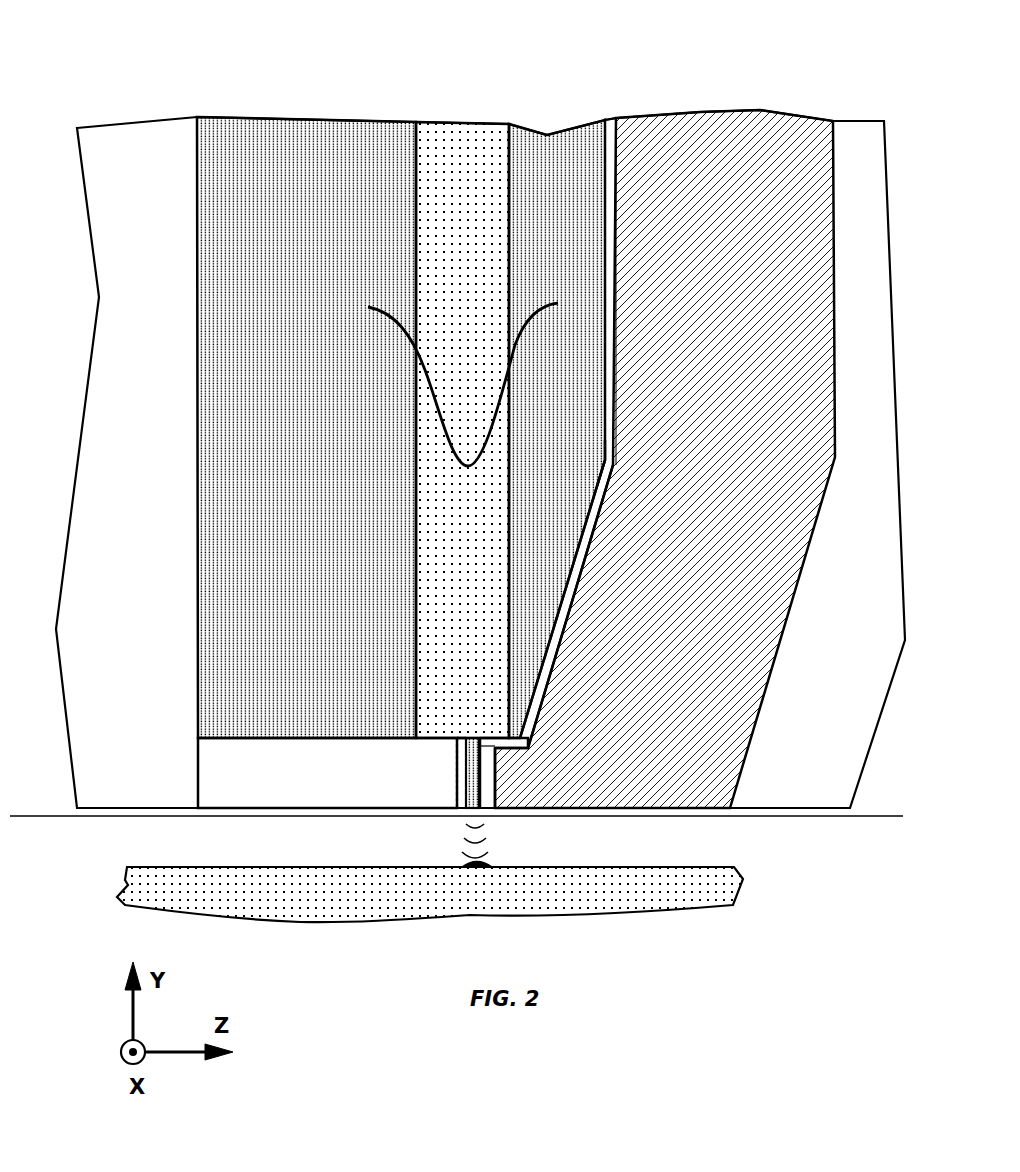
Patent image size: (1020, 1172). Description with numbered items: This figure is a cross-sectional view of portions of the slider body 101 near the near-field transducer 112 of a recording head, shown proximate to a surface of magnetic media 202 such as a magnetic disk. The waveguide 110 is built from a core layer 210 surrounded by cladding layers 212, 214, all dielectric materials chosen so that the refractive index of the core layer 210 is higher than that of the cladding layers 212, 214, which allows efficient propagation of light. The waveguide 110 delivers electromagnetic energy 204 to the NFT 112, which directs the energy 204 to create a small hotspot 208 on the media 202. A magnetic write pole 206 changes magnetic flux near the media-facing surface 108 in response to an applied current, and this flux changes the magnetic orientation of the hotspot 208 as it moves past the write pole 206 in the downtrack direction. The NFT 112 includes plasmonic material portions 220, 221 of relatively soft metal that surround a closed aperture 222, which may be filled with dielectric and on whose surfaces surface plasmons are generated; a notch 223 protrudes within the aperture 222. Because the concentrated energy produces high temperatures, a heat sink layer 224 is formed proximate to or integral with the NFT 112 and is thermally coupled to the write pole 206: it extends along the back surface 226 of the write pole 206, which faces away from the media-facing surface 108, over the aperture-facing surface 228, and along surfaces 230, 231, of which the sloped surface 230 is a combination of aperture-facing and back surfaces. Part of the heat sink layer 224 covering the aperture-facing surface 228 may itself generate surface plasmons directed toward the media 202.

The slider body 101 is at (123, 56).
The media-facing surface 108 is at (790, 818).
The waveguide 110 is at (488, 81).
The near-field transducer (NFT) 112 is at (457, 820).
The magnetic media 202 is at (188, 892).
The electromagnetic energy 204 is at (398, 313).
The magnetic write pole 206 is at (737, 110).
The hotspot 208 is at (477, 872).
The core layer 210 is at (457, 123).
The cladding layer 212 is at (543, 143).
The cladding layer 214 is at (302, 120).
The first plasmonic material portion 220 is at (490, 786).
The plasmonic material portion 221 is at (438, 757).
The closed aperture 222 is at (478, 735).
The notch 223 is at (458, 737).
The heat sink layer 224 is at (598, 482).
The back surface 226 is at (512, 750).
The aperture-facing surface 228 is at (496, 782).
The sloped surface 230 is at (552, 682).
The surface 231 is at (614, 364).